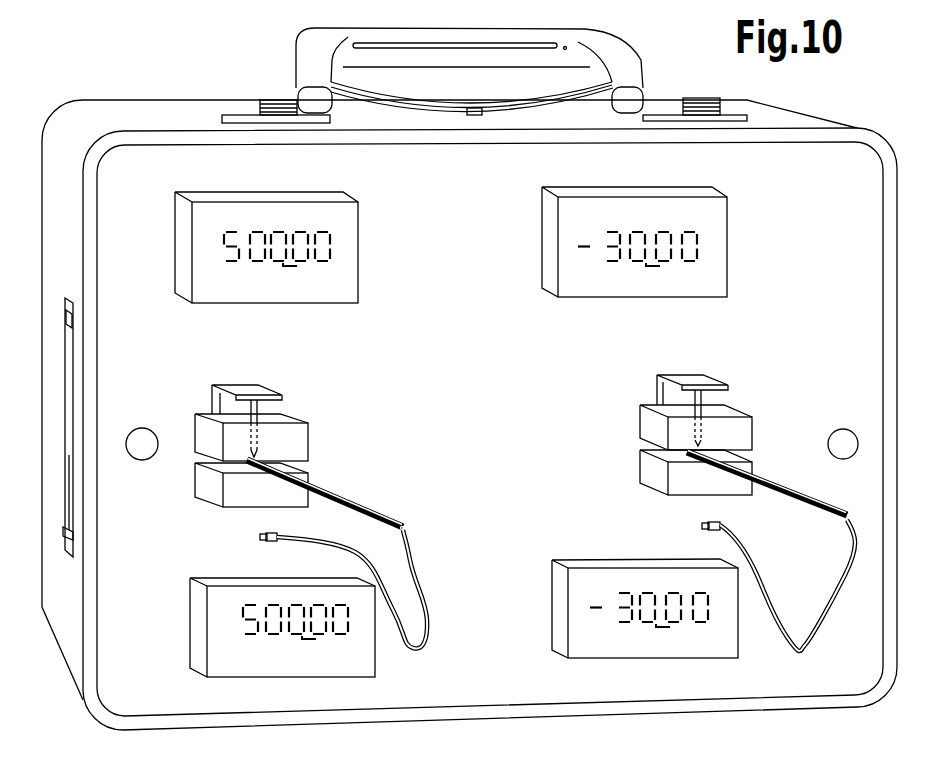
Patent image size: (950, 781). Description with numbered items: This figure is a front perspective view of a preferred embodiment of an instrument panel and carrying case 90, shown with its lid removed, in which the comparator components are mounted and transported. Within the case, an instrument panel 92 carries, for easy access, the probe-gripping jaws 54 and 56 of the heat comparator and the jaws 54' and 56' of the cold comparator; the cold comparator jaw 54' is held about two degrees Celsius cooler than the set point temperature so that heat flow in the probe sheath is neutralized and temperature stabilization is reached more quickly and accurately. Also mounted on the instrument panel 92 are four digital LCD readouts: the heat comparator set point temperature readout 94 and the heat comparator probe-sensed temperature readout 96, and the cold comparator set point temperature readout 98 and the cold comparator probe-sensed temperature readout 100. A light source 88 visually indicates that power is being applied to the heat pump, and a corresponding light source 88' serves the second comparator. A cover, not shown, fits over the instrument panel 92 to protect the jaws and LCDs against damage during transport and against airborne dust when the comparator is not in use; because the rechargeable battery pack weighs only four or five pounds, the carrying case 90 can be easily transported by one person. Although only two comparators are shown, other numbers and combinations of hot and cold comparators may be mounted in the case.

The instrument panel and carrying case 90 is at (130, 70).
The instrument panel 92 is at (483, 206).
The heat comparator digital LCD set point temperature readout 94 is at (338, 267).
The heat comparator digital LCD probe-sensed temperature readout 96 is at (198, 663).
The cold comparator digital LCD set point temperature readout 98 is at (703, 271).
The cold comparator digital LCD probe-sensed temperature readout 100 is at (562, 638).
The jaw 56 is at (288, 423).
The jaw 54 is at (311, 543).
The jaw 56' is at (652, 412).
The jaw 54' is at (703, 550).
The light source 88 is at (142, 415).
The light source 88' is at (848, 412).